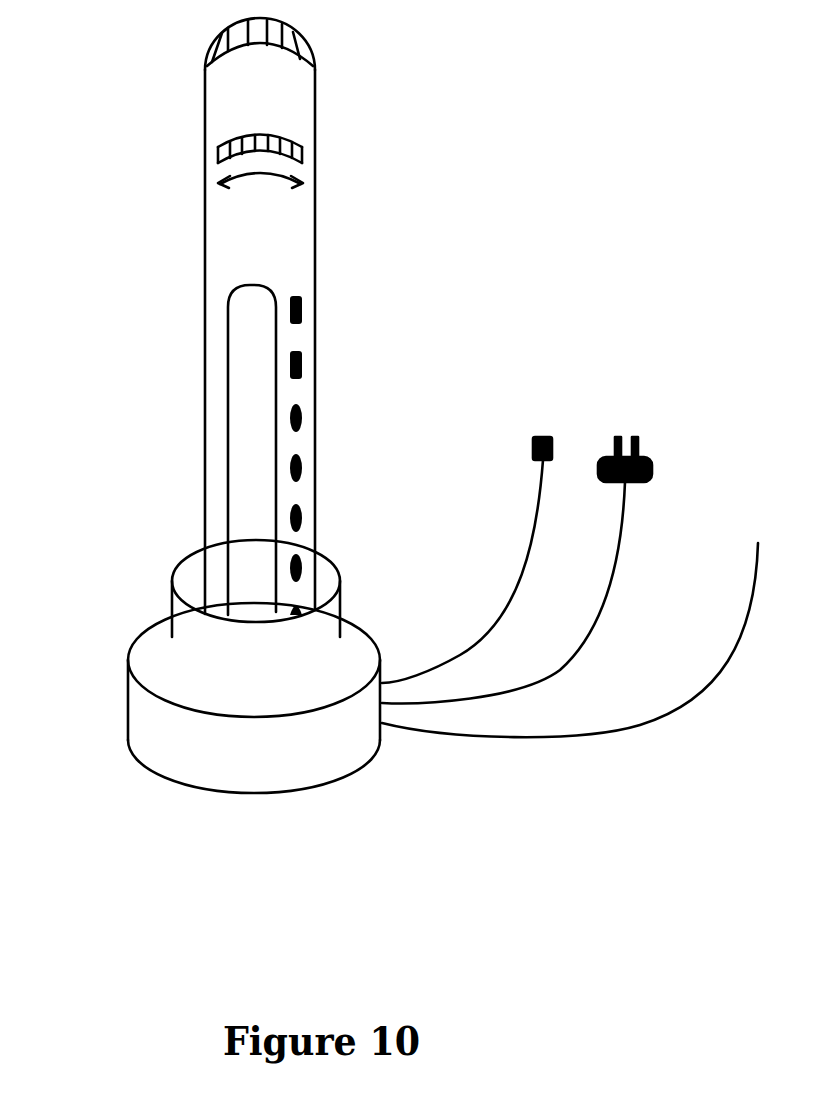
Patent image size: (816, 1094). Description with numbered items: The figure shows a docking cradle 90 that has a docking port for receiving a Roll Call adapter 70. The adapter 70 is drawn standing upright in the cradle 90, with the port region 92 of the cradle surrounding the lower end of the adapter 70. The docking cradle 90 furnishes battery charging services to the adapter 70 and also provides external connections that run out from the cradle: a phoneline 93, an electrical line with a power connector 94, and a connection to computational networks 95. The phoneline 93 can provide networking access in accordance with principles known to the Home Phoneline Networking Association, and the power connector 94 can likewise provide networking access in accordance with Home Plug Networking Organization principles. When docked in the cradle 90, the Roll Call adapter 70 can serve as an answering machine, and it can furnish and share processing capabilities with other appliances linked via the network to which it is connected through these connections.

The Roll Call adapter 70 is at (218, 103).
The docking cradle 90 is at (206, 745).
The collar 92 is at (188, 600).
The phoneline 93 is at (522, 547).
The power connector 94 is at (593, 642).
The computational network connection 95 is at (515, 749).